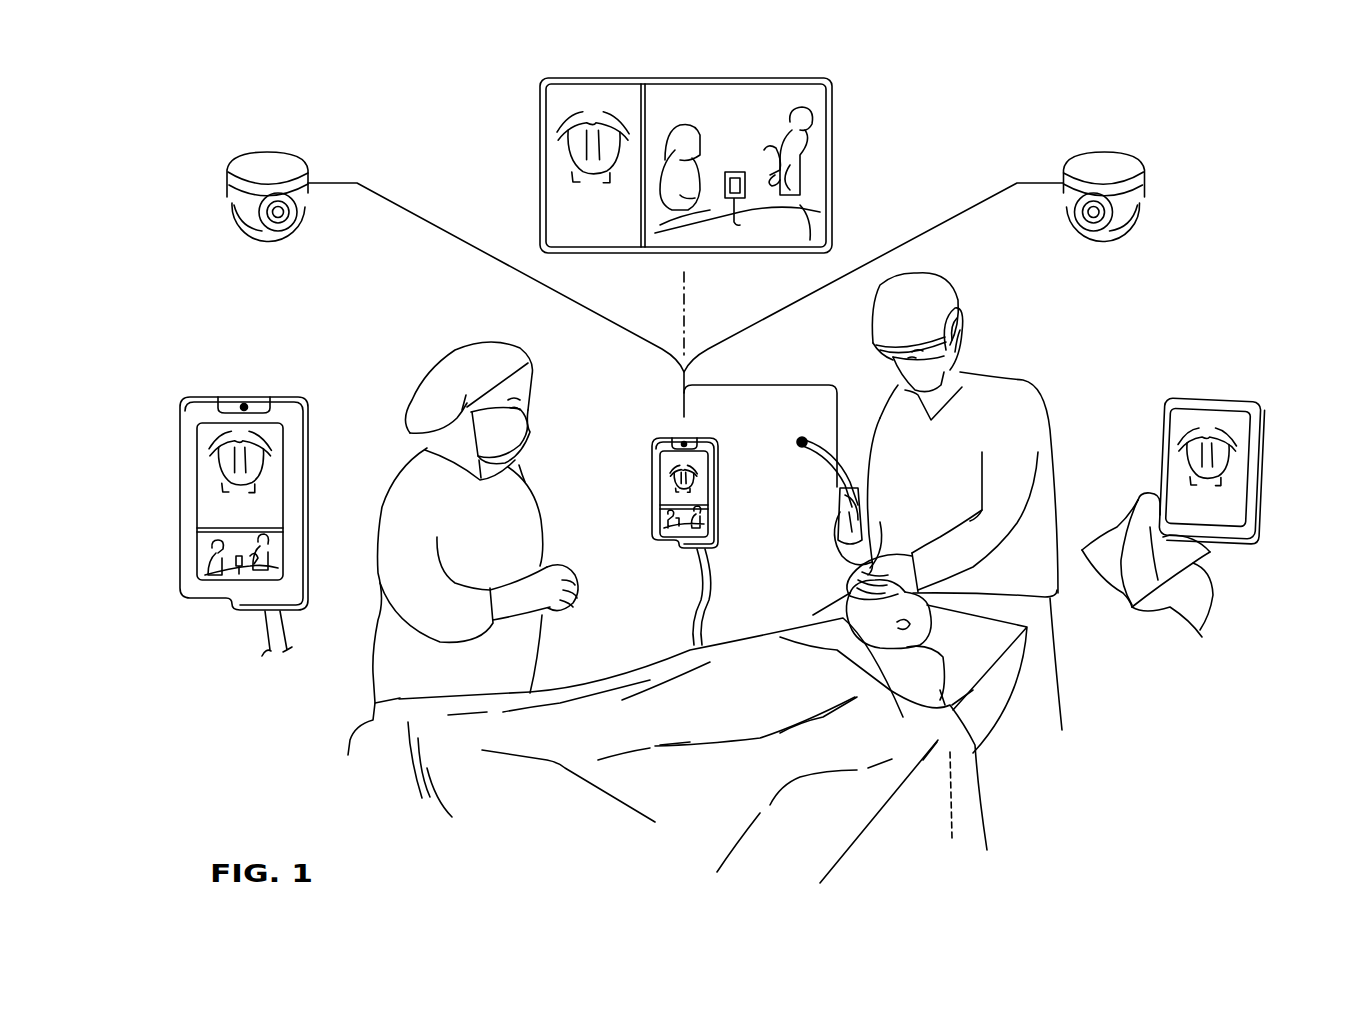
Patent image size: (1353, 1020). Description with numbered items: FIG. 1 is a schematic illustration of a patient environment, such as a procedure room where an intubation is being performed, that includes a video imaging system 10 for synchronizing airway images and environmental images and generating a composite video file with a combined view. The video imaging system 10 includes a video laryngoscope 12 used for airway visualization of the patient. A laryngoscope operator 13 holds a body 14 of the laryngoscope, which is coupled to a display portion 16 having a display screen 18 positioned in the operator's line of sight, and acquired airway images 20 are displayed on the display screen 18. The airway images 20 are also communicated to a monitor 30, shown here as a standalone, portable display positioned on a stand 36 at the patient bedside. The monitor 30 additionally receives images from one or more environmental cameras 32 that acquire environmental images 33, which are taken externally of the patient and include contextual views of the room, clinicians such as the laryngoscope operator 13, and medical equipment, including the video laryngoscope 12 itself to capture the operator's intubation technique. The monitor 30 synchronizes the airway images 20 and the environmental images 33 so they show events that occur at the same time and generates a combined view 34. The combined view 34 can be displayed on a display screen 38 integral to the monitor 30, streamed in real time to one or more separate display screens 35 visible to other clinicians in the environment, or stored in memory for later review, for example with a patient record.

The video imaging system 10 is at (150, 95).
The video laryngoscope 12 is at (828, 544).
The laryngoscope operator 13 is at (940, 292).
The body 14 is at (1140, 532).
The display portion 16 is at (1262, 432).
The display screen 18 is at (1232, 503).
The airway images 20 is at (551, 160).
The monitor 30 is at (183, 535).
The environmental cameras 32 is at (267, 152).
The environmental images 33 is at (820, 215).
The combined view 34 is at (551, 98).
The separate display screens 35 is at (828, 116).
The stand 36 is at (700, 598).
The display screen 38 is at (664, 490).